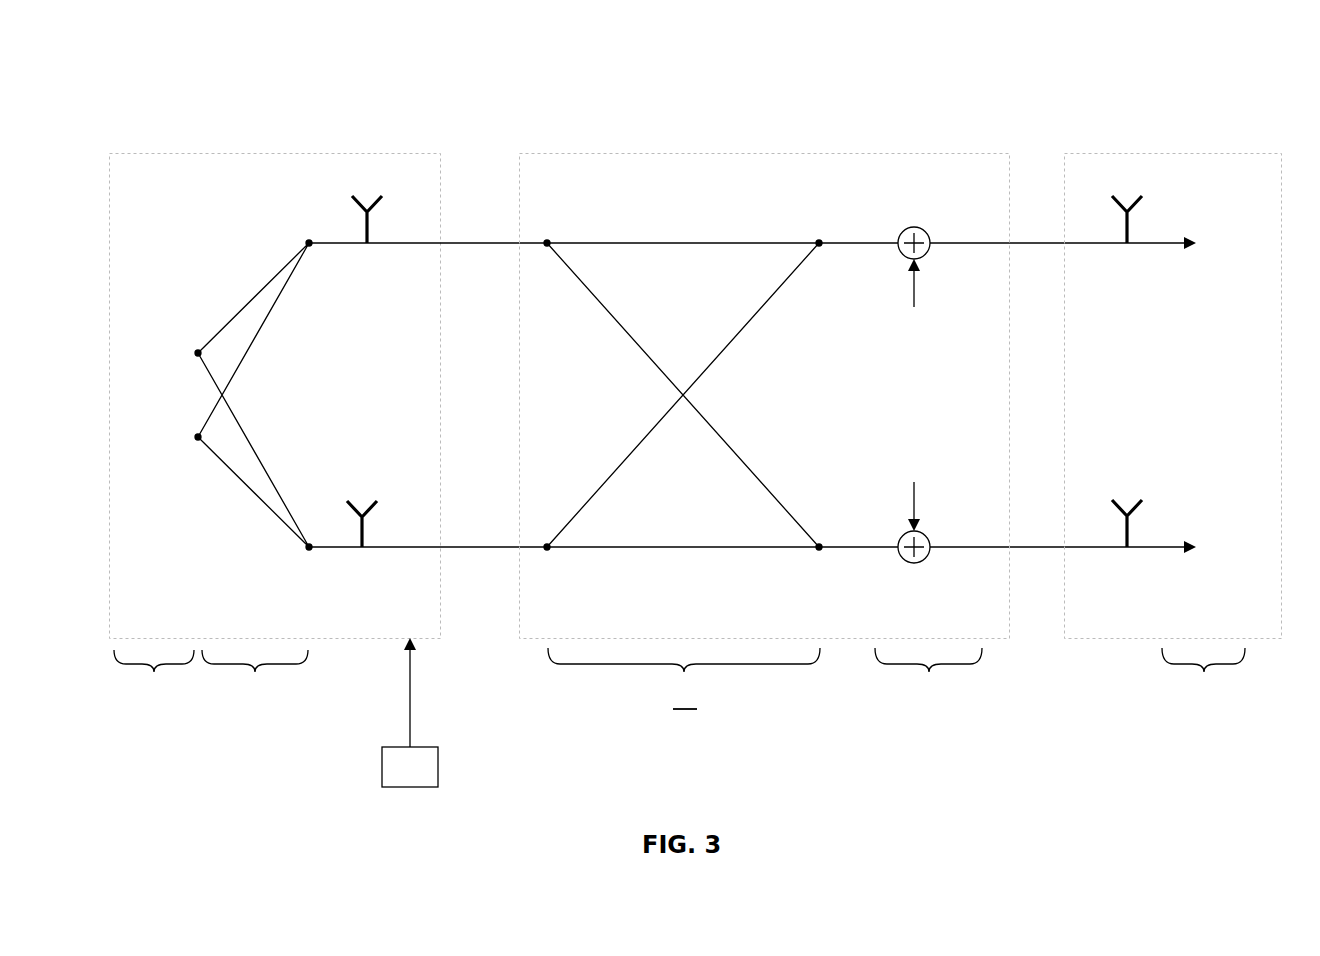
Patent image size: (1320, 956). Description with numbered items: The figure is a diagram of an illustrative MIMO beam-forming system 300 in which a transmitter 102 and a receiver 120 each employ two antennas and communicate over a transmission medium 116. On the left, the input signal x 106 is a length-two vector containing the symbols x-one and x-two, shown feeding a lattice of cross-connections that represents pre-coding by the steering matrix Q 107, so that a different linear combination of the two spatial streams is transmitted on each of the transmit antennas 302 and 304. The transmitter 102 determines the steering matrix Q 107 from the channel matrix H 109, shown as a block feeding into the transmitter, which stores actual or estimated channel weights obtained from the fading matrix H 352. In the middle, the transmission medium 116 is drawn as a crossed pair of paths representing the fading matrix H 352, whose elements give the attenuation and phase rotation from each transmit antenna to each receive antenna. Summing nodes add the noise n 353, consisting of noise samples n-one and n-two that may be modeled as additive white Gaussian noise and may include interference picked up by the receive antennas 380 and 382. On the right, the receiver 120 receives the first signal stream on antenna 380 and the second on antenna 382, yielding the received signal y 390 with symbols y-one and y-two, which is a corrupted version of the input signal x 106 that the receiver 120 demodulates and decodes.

The MIMO beam-forming system 300 is at (128, 78).
The transmitter 102 is at (178, 152).
The input signal x 106 is at (153, 706).
The steering matrix Q 107 is at (257, 712).
The channel matrix H 109 is at (438, 767).
The transmission medium 116 is at (588, 152).
The receiver 120 is at (1133, 152).
The antenna 302 is at (358, 213).
The antenna 304 is at (366, 526).
The fading matrix H 352 is at (685, 718).
The noise n 353 is at (930, 702).
The antenna 380 is at (1131, 223).
The antenna 382 is at (1131, 527).
The received signal y 390 is at (1203, 707).